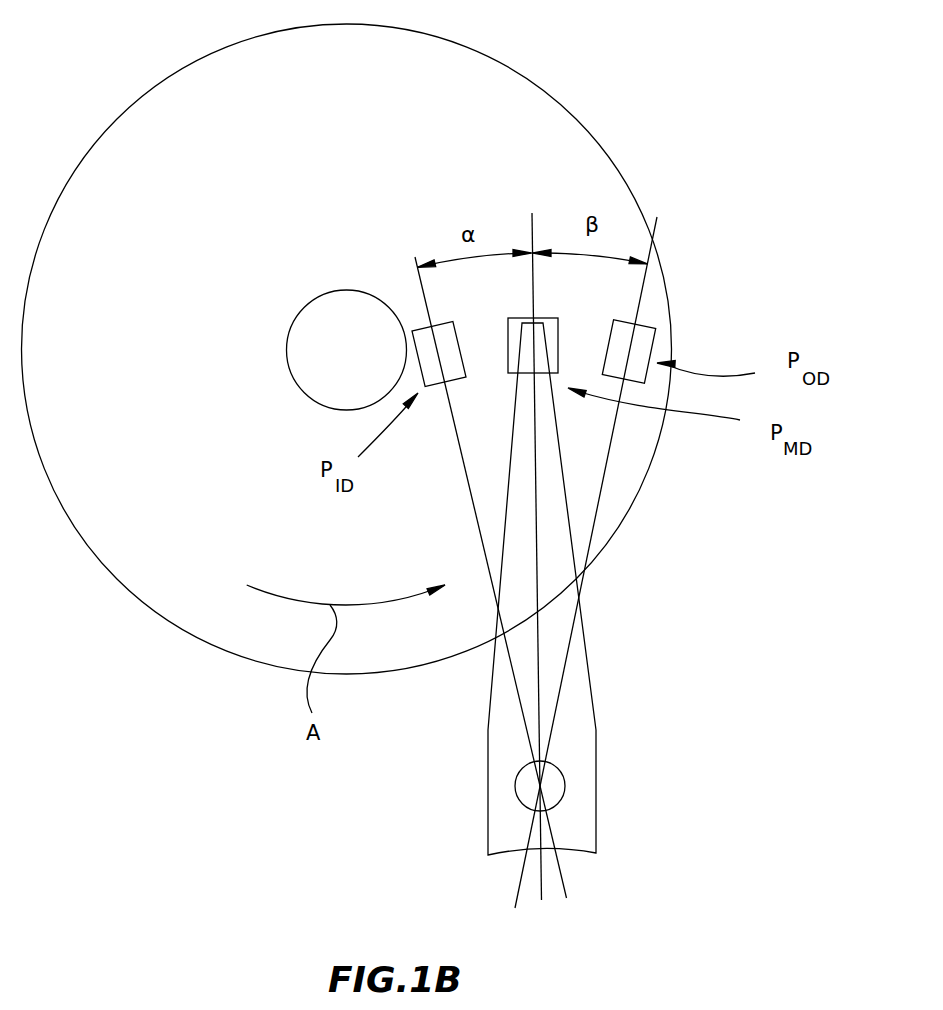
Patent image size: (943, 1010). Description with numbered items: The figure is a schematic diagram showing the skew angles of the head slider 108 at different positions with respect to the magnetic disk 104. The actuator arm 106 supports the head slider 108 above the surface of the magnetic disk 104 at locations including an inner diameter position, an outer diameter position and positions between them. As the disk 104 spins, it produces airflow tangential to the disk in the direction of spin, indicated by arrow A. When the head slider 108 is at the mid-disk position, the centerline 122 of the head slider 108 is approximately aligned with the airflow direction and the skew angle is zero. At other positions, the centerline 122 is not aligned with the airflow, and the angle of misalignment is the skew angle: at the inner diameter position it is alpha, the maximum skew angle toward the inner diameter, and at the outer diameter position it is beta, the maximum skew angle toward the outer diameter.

The magnetic disk 104 is at (152, 162).
The actuator arm 106 is at (615, 705).
The head slider 108 is at (623, 333).
The centerline 122 is at (531, 227).